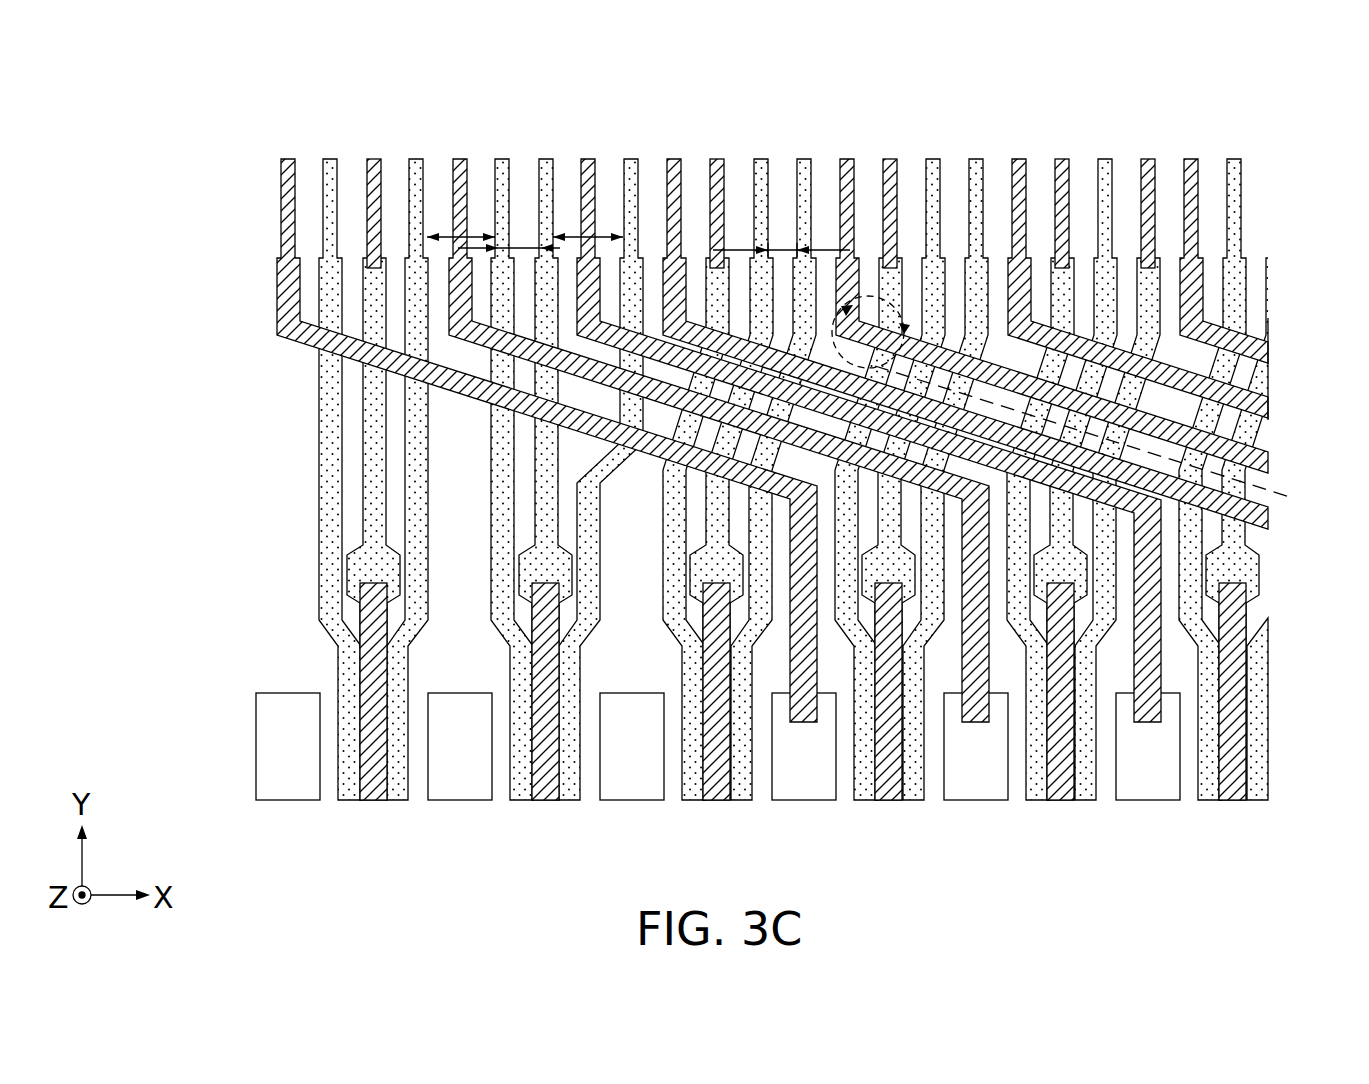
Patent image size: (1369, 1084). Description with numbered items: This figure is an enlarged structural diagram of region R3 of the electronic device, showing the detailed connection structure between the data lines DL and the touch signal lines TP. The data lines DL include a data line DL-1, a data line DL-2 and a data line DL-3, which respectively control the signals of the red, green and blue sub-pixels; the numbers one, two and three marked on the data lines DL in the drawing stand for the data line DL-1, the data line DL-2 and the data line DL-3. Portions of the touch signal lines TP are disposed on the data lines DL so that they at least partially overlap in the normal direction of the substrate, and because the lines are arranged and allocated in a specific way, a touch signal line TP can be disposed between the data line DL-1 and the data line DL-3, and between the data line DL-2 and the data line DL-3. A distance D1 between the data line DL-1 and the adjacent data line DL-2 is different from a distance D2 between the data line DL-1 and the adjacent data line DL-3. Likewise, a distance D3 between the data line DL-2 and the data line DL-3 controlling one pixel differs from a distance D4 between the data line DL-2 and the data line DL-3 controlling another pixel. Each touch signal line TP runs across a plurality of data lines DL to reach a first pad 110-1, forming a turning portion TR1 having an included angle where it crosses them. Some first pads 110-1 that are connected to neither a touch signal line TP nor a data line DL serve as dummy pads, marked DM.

The touch signal line TP is at (281, 206).
The data line DL is at (200, 377).
The data line DL-1 is at (500, 160).
The data line DL-2 is at (546, 160).
The data line DL-3 is at (631, 167).
The distance D1 is at (509, 233).
The distance D2 is at (461, 218).
The distance D3 is at (588, 218).
The distance D4 is at (781, 235).
The turning portion TR1 is at (1116, 443).
The first pad 110-1 is at (458, 790).
The region R3 is at (137, 116).